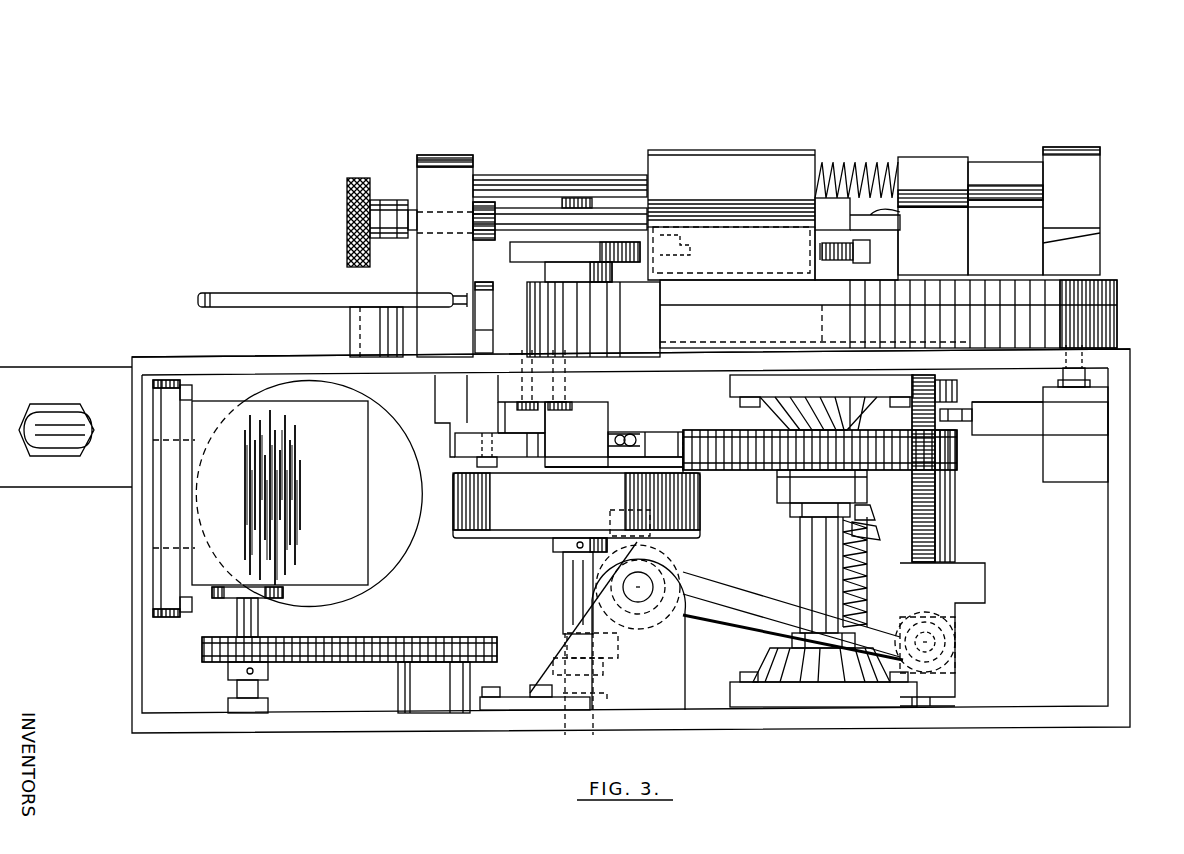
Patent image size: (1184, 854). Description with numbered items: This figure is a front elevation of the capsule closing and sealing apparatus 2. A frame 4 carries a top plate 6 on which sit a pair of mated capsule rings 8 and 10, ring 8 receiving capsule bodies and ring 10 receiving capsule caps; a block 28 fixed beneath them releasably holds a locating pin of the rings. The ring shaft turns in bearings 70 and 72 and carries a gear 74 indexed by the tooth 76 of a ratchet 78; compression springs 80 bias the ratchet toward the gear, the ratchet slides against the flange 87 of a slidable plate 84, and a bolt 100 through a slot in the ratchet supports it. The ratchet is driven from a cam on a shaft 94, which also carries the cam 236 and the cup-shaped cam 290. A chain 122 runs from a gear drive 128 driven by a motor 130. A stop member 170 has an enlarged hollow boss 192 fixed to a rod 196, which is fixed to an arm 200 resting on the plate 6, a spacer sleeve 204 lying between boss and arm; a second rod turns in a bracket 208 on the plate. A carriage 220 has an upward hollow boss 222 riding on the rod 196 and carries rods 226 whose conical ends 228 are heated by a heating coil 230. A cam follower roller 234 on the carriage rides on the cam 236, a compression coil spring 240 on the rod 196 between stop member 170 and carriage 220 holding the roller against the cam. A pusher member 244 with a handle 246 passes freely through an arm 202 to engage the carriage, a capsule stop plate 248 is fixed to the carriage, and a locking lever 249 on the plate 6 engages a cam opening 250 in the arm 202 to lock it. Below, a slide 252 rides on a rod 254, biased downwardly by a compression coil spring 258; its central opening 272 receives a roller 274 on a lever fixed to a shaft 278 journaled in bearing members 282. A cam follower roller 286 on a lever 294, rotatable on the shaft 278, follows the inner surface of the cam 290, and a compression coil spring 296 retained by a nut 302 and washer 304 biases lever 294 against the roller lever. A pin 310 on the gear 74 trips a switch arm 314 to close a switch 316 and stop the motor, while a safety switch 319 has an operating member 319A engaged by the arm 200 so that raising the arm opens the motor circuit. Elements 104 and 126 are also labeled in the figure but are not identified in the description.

The capsule closing and sealing apparatus 2 is at (1108, 58).
The frame 4 is at (140, 630).
The top plate 6 is at (1118, 356).
The capsule ring 8 is at (1112, 318).
The capsule ring 10 is at (1110, 290).
The block 28 is at (603, 680).
The bearing 70 is at (722, 378).
The bearing 72 is at (750, 660).
The gear 74 is at (752, 460).
The tooth 76 is at (695, 440).
The ratchet 78 is at (659, 437).
The compression springs 80 is at (620, 437).
The slidable plate 84 is at (568, 462).
The flange 87 is at (660, 453).
The shaft 94 is at (568, 598).
The bolt 100 is at (500, 465).
The support block 104 is at (440, 405).
The chain 122 is at (370, 637).
The shaft 126 is at (258, 612).
The gear drive 128 is at (296, 503).
The motor 130 is at (372, 503).
The stop member 170 is at (968, 242).
The hollow boss 192 is at (938, 167).
The rod 196 is at (543, 187).
The arm 200 is at (1088, 160).
The arm 202 is at (460, 155).
The spacer sleeve 204 is at (1009, 170).
The bracket 208 is at (493, 292).
The carriage 220 is at (722, 255).
The hollow boss 222 is at (752, 162).
The rods 226 is at (860, 262).
The conical ends 228 is at (875, 252).
The heating coil 230 is at (822, 256).
The cam follower roller 234 is at (640, 274).
The cam 236 is at (510, 252).
The compression coil spring 240 is at (850, 165).
The pusher member 244 is at (478, 205).
The handle 246 is at (352, 220).
The capsule stop plate 248 is at (893, 213).
The locking lever 249 is at (293, 293).
The cam opening 250 is at (456, 308).
The slide 252 is at (980, 585).
The rod 254 is at (940, 545).
The compression coil spring 258 is at (930, 517).
The central opening 272 is at (950, 667).
The roller 274 is at (950, 640).
The shaft 278 is at (645, 585).
The bearing member 282 is at (623, 694).
The cam follower roller 286 is at (704, 520).
The cup-shaped cam 290 is at (513, 530).
The lever 294 is at (748, 592).
The compression coil spring 296 is at (860, 562).
The nut 302 is at (866, 518).
The washer 304 is at (862, 530).
The pin 310 is at (948, 395).
The switch arm 314 is at (975, 412).
The switch 316 is at (1010, 434).
The safety switch 319 is at (1100, 445).
The operating member 319A is at (1088, 373).